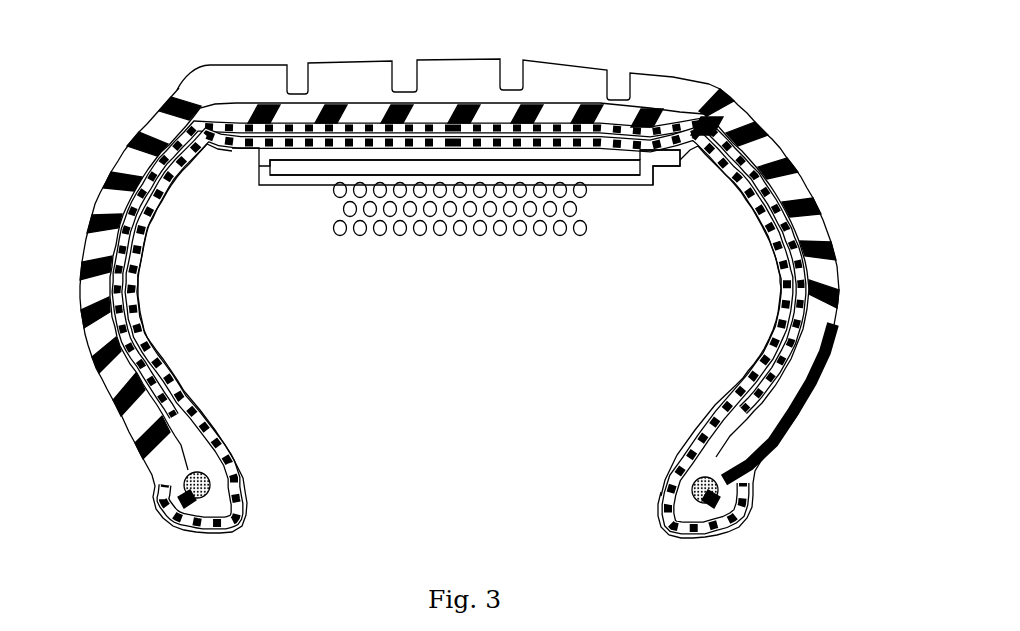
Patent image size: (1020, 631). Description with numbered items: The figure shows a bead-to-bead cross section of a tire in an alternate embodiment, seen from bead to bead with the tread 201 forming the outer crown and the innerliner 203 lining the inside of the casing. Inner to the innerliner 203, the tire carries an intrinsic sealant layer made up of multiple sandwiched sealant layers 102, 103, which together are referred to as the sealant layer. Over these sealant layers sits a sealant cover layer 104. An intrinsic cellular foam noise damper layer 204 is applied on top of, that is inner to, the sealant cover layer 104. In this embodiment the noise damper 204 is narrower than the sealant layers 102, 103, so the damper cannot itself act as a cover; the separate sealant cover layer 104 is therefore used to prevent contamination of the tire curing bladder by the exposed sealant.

The intrinsic sealant layer 102 is at (313, 176).
The intrinsic sealant layer 103 is at (613, 168).
The sealant cover layer 104 is at (268, 186).
The tread 201 is at (303, 78).
The innerliner 203 is at (246, 475).
The intrinsic cellular foam noise damper layer 204 is at (522, 236).